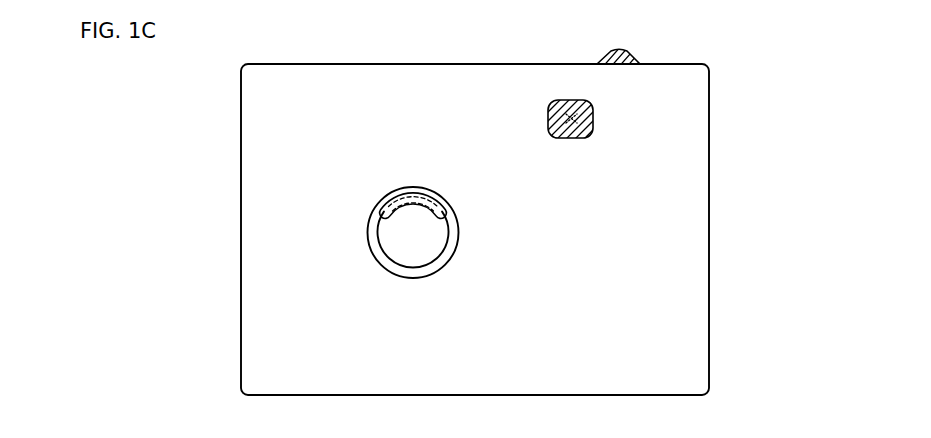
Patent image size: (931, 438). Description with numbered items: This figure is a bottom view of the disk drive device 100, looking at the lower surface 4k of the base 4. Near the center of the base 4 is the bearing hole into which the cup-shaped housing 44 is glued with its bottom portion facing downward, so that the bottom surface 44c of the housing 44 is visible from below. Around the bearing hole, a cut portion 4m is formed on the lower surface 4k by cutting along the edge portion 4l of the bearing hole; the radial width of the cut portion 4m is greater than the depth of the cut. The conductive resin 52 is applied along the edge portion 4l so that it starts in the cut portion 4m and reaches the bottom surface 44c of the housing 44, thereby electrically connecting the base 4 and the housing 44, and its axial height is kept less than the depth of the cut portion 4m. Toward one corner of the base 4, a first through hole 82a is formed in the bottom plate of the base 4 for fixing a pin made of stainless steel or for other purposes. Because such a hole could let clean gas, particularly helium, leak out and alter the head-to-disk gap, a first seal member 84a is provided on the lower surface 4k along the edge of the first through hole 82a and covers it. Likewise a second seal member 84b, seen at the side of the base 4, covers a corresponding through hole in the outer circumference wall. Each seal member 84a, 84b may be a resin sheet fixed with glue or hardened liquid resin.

The disk drive device 100 is at (515, 222).
The base 4 is at (708, 192).
The lower surface of the base 4k is at (688, 298).
The edge portion of the bearing hole 4l is at (457, 228).
The cut portion 4m is at (452, 250).
The housing 44 is at (417, 250).
The bottom surface of the housing 44c is at (430, 252).
The conductive resin 52 is at (424, 192).
The first seal member 84a is at (570, 99).
The second seal member 84b is at (633, 54).
The first through hole 82a is at (594, 110).